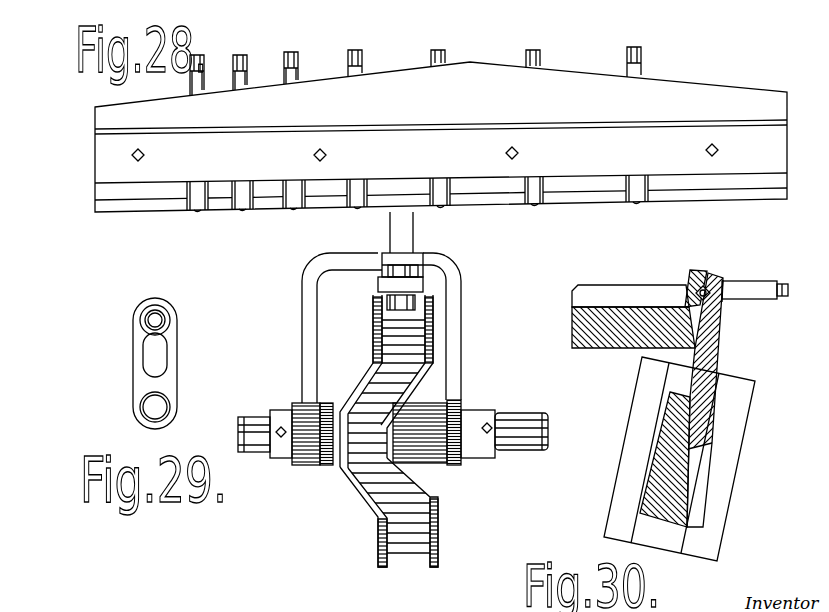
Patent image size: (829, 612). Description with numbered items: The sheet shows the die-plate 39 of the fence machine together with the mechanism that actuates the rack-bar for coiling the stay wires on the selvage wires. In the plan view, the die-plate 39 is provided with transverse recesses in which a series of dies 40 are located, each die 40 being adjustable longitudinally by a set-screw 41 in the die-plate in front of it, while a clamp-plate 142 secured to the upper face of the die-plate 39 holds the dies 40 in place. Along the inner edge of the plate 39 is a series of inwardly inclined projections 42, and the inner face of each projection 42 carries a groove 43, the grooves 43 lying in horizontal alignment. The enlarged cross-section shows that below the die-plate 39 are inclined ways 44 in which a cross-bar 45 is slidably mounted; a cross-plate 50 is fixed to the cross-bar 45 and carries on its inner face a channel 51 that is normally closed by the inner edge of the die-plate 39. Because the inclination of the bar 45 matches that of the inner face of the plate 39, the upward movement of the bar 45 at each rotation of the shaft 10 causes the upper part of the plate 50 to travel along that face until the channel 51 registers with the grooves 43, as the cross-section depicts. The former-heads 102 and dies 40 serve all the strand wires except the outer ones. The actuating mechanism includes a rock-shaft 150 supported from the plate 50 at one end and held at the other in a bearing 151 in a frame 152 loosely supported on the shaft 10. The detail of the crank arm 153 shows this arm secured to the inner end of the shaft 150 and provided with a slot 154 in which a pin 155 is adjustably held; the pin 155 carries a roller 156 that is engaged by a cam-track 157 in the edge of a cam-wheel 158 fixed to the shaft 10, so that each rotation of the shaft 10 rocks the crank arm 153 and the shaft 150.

In FIG. 29, the shaft 10 is at (523, 445).
In FIG. 28, the die-plate 39 is at (122, 117).
In FIG. 30, the die-plate 39 is at (607, 353).
In FIG. 28, the die 40 is at (203, 207).
In FIG. 30, the die 40 is at (635, 292).
In FIG. 28, the set-screw 41 is at (300, 56).
In FIG. 28, the projection 42 is at (153, 205).
In FIG. 30, the projection 42 is at (702, 267).
In FIG. 30, the groove 43 is at (693, 283).
In FIG. 30, the inclined way 44 is at (638, 425).
In FIG. 30, the cross-bar 45 is at (660, 482).
In FIG. 30, the cross-plate 50 is at (727, 348).
In FIG. 30, the channel 51 is at (725, 302).
In FIG. 30, the former-head 102 is at (752, 285).
In FIG. 28, the clamp-plate 142 is at (745, 133).
In FIG. 29, the rock-shaft 150 is at (415, 223).
In FIG. 29, the bearing 151 is at (387, 263).
In FIG. 29, the frame 152 is at (457, 295).
In FIG. 29, the crank arm 153 is at (173, 350).
In FIG. 29, the slot 154 is at (150, 358).
In FIG. 29, the pin 155 is at (148, 320).
In FIG. 29, the roller 156 is at (152, 315).
In FIG. 29, the cam-track 157 is at (410, 353).
In FIG. 29, the cam-wheel 158 is at (337, 473).